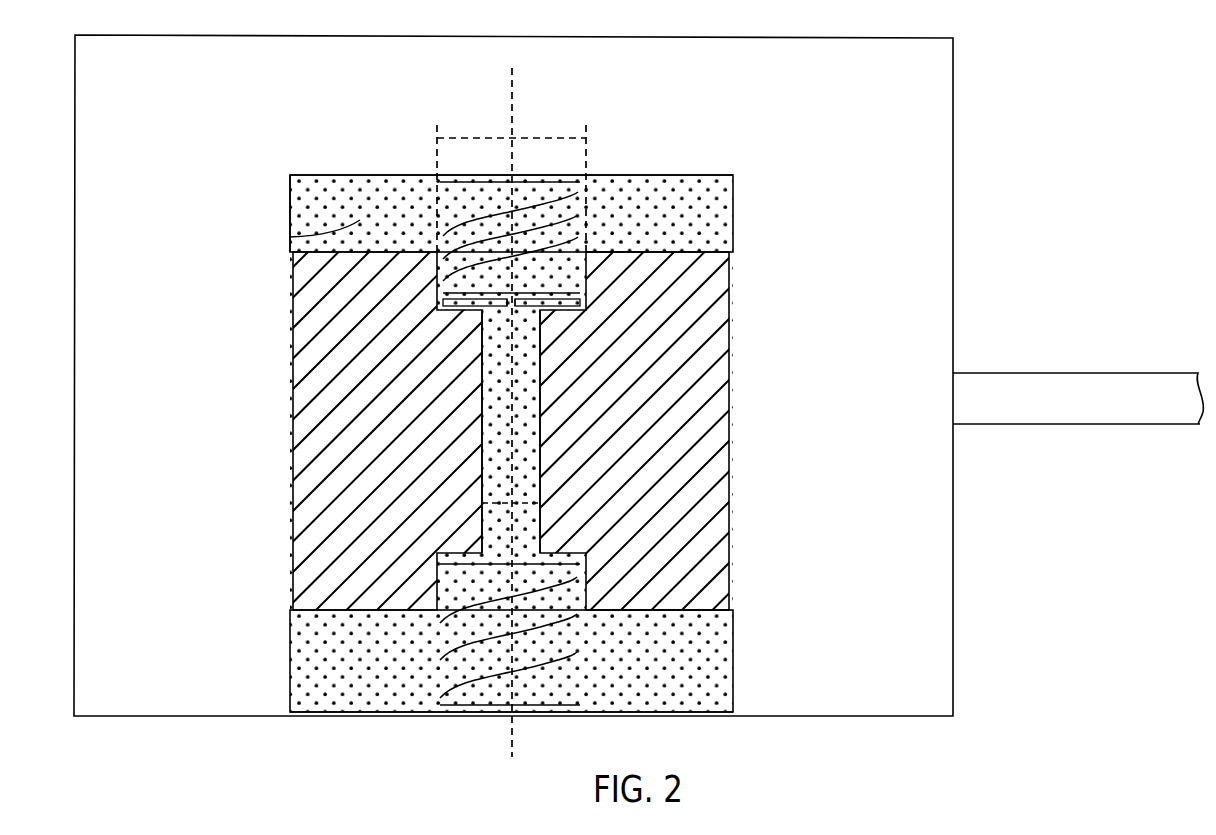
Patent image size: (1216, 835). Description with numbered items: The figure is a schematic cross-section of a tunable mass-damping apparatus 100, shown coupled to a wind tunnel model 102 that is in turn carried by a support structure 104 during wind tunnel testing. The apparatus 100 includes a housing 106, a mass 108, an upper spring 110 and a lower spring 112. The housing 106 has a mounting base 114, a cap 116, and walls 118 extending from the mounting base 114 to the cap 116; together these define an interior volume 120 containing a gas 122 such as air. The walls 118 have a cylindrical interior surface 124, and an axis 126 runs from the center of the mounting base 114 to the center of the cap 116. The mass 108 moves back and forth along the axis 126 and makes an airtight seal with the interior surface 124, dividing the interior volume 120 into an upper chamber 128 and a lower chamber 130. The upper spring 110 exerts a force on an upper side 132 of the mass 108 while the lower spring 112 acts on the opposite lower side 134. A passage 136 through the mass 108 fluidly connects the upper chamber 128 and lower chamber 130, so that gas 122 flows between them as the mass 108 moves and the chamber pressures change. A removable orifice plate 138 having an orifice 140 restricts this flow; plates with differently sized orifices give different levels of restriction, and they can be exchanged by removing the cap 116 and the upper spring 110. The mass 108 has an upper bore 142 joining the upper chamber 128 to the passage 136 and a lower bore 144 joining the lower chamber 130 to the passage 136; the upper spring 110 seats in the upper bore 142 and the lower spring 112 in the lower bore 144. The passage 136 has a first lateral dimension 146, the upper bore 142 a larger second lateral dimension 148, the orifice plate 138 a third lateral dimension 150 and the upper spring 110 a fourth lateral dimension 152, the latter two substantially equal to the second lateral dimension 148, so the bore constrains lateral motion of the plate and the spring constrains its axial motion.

The tunable mass-damping apparatus 100 is at (264, 120).
The wind tunnel model 102 is at (172, 716).
The support structure 104 is at (1075, 381).
The housing 106 is at (703, 175).
The mass 108 is at (722, 350).
The upper spring 110 is at (483, 220).
The lower spring 112 is at (527, 632).
The mounting base 114 is at (646, 712).
The cap 116 is at (658, 175).
The walls 118 is at (290, 230).
The interior volume 120 is at (726, 217).
The gas 122 is at (342, 692).
The interior surface 124 is at (332, 217).
The axis 126 is at (513, 100).
The upper chamber 128 is at (335, 217).
The lower chamber 130 is at (328, 678).
The upper side 132 is at (637, 252).
The lower side 134 is at (641, 612).
The passage 136 is at (535, 432).
The orifice plate 138 is at (570, 303).
The orifice 140 is at (516, 318).
The upper bore 142 is at (444, 280).
The lower bore 144 is at (577, 597).
The first lateral dimension 146 is at (527, 503).
The second lateral dimension 148 is at (437, 125).
The third lateral dimension 150 is at (493, 137).
The fourth lateral dimension 152 is at (572, 137).